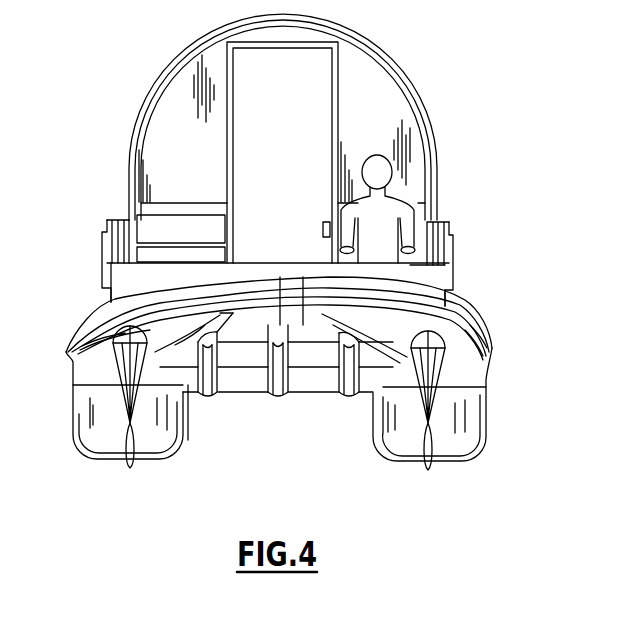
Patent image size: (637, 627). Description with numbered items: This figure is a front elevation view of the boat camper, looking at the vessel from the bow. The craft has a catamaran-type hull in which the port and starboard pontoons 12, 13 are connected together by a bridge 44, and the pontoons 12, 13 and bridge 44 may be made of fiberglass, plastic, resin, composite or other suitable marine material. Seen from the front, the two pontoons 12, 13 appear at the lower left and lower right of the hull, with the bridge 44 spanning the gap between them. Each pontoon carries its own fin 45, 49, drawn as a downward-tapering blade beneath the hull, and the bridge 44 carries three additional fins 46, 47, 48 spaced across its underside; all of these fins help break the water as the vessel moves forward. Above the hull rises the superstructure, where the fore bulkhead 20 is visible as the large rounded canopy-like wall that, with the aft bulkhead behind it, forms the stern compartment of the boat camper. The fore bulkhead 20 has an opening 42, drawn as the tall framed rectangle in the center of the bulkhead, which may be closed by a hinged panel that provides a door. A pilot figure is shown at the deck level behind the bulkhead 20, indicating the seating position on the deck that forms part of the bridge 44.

The port pontoon 12 is at (485, 438).
The starboard pontoon 13 is at (103, 462).
The fore bulkhead 20 is at (437, 123).
The opening 42 is at (263, 122).
The bridge 44 is at (303, 325).
The pontoon fin 45 is at (129, 468).
The bridge fin 46 is at (208, 400).
The bridge fin 47 is at (285, 400).
The bridge fin 48 is at (350, 400).
The pontoon fin 49 is at (428, 472).